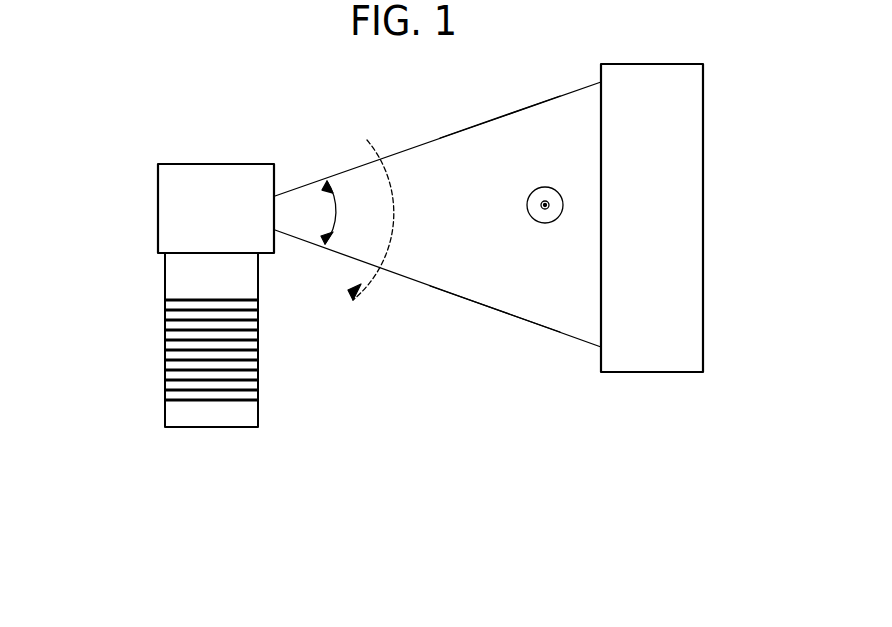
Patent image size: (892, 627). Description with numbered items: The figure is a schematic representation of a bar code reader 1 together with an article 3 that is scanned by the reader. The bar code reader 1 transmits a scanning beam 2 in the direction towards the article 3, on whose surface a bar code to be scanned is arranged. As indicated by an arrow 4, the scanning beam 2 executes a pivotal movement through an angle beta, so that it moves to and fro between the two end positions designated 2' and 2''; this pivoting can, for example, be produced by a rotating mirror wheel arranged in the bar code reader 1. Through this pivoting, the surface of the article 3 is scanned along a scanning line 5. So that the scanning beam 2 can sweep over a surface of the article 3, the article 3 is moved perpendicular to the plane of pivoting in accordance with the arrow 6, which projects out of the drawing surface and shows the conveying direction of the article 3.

The bar code reader 1 is at (170, 186).
The scanning beam 2 is at (438, 214).
The scanning beam position 2' is at (500, 101).
The scanning beam position 2'' is at (495, 316).
The article 3 is at (686, 210).
The arrow 4 is at (383, 190).
The scanning line 5 is at (600, 140).
The arrow 6 is at (543, 222).